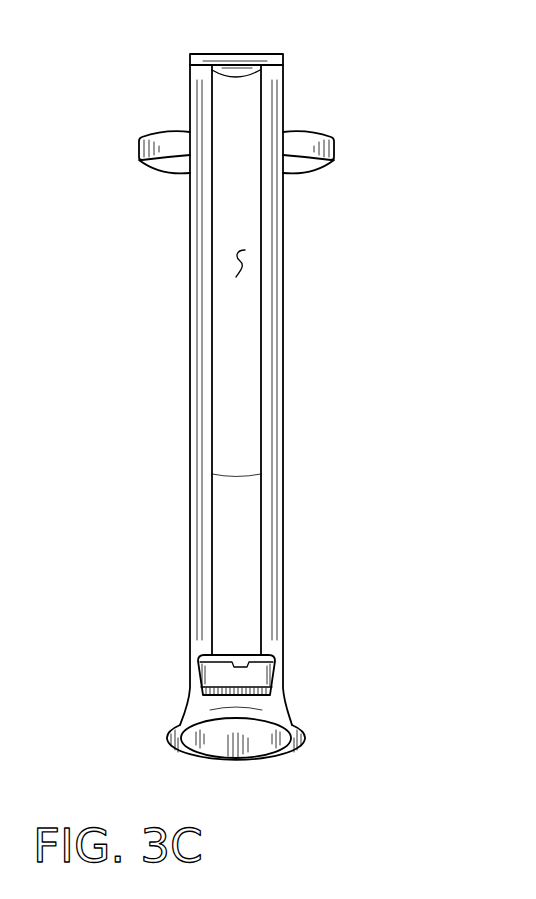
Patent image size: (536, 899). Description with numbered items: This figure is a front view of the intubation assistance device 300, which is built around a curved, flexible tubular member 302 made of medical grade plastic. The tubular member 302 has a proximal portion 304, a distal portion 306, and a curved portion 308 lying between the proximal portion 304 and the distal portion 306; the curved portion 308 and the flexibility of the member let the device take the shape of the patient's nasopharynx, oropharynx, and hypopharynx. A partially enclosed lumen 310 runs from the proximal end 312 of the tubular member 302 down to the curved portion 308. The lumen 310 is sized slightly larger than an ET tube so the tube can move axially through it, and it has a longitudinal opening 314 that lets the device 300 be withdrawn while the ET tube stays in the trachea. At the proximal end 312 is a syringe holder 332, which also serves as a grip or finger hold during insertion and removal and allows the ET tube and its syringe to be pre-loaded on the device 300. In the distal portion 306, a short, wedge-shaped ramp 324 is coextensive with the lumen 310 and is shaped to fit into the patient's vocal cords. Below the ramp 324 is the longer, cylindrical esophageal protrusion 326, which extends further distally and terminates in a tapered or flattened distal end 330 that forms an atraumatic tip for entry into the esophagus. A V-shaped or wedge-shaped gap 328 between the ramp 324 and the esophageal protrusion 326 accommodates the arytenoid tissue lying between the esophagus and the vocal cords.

The intubation assistance device 300 is at (260, 414).
The tubular member 302 is at (197, 428).
The proximal portion 304 is at (245, 362).
The distal portion 306 is at (288, 705).
The curved portion 308 is at (285, 603).
The lumen 310 is at (240, 323).
The proximal end 312 is at (200, 62).
The longitudinal opening 314 is at (228, 262).
The ramp 324 is at (217, 673).
The esophageal protrusion 326 is at (197, 708).
The gap 328 is at (283, 703).
The distal end 330 is at (258, 742).
The syringe holder 332 is at (313, 134).